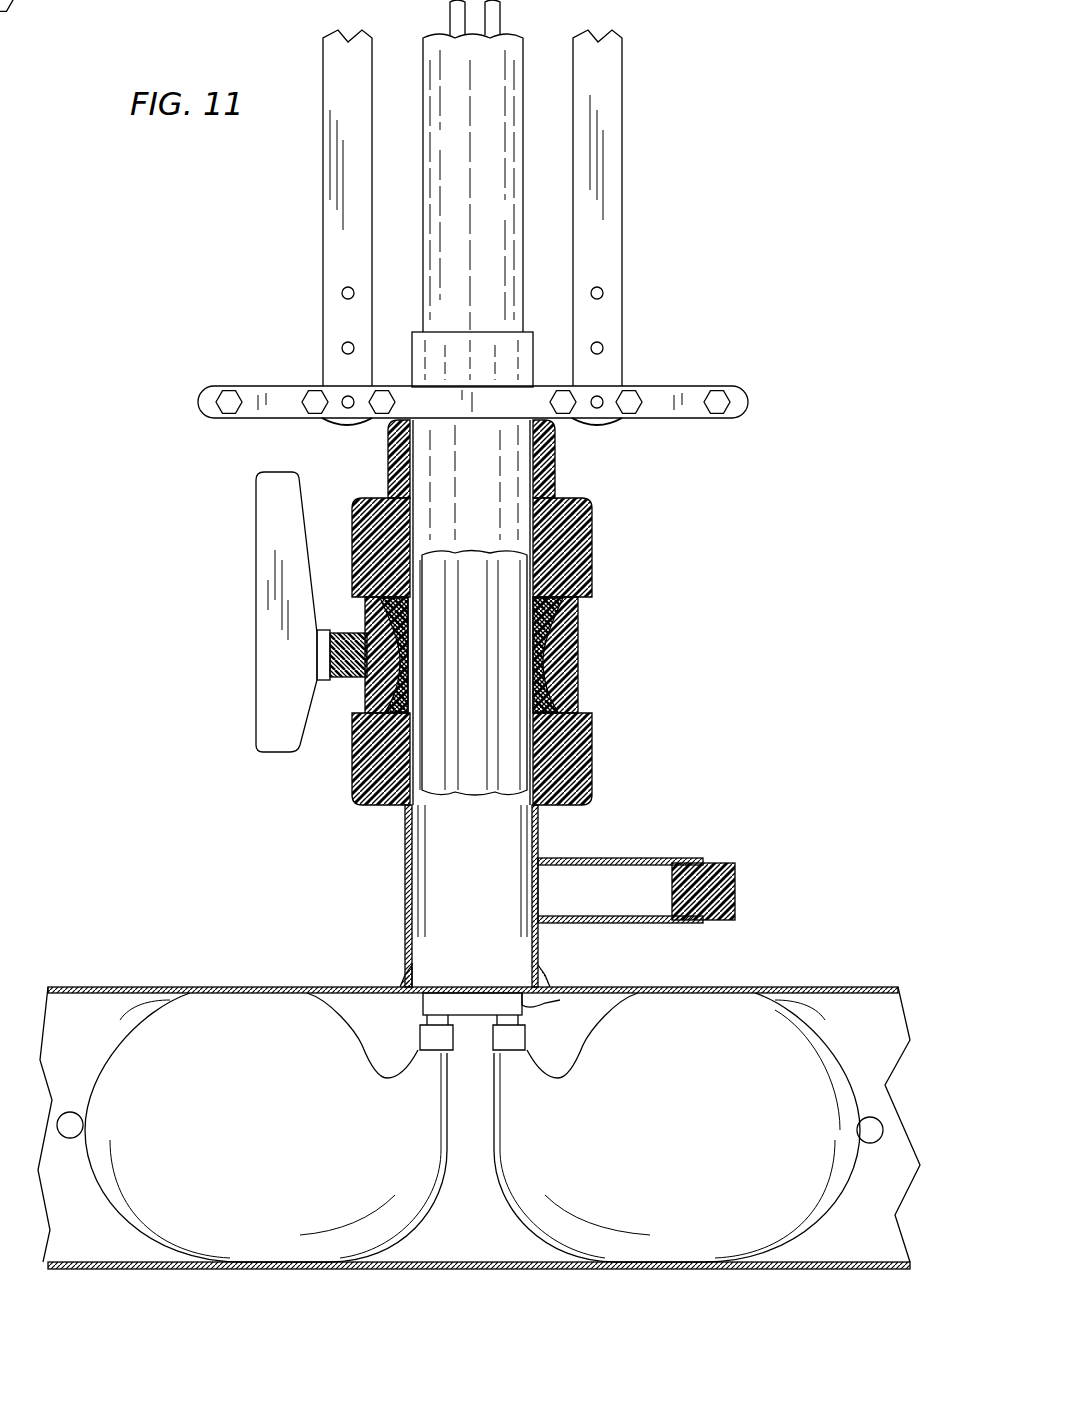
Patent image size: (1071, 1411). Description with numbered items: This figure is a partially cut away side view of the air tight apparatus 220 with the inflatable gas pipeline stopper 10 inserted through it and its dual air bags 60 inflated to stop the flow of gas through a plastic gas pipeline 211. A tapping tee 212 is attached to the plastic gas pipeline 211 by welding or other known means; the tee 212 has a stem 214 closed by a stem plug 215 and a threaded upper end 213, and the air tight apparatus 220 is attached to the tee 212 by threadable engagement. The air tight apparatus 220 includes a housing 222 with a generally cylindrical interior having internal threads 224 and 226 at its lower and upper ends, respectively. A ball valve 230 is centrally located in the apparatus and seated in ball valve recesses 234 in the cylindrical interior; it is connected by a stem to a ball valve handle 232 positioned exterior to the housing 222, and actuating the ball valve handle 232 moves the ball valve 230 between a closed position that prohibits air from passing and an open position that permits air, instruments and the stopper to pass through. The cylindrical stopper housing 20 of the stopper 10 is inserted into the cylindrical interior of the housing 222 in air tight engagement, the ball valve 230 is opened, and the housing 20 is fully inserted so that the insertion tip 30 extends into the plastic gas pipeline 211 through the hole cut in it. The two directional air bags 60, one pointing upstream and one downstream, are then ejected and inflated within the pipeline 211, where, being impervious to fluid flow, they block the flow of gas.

The inflatable gas pipeline stopper 10 is at (262, 295).
The cylindrical stopper housing 20 is at (540, 832).
The insertion tip 30 is at (540, 1003).
The air bag 60 is at (150, 1010).
The plastic gas pipeline 211 is at (868, 987).
The tapping tee 212 is at (402, 907).
The threaded upper end 213 is at (405, 815).
The stem 214 is at (672, 858).
The stem plug 215 is at (735, 903).
The air tight apparatus 220 is at (630, 553).
The housing 222 is at (592, 733).
The internal threads 224 is at (352, 790).
The internal threads 226 is at (545, 488).
The ball valve 230 is at (560, 660).
The ball valve handle 232 is at (268, 726).
The ball valve recesses 234 is at (560, 622).